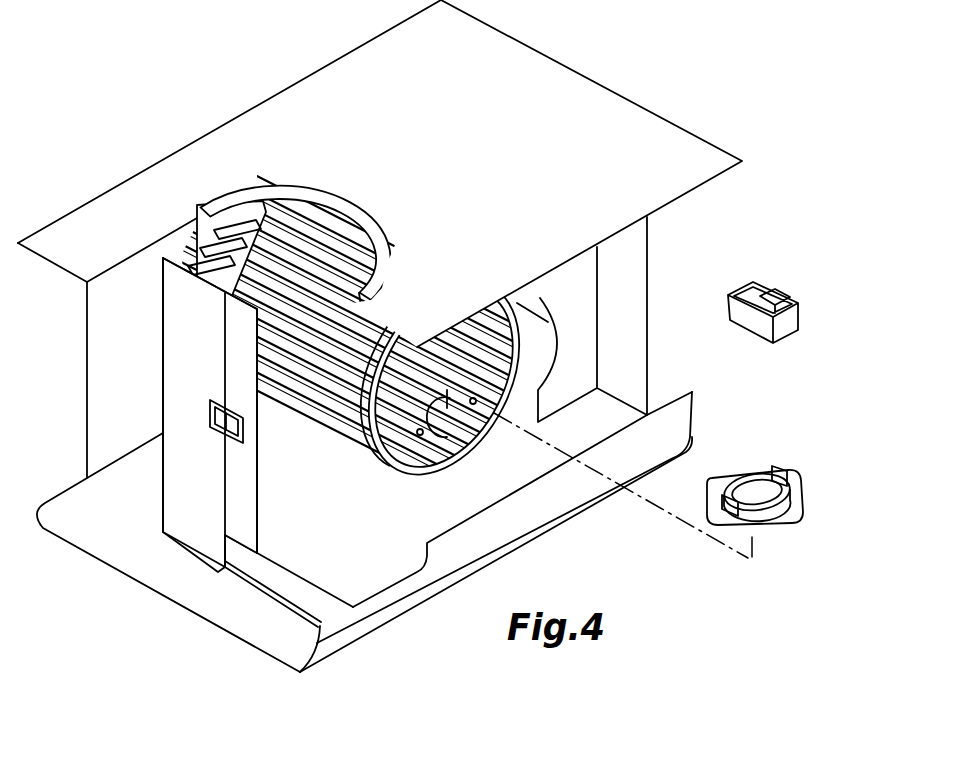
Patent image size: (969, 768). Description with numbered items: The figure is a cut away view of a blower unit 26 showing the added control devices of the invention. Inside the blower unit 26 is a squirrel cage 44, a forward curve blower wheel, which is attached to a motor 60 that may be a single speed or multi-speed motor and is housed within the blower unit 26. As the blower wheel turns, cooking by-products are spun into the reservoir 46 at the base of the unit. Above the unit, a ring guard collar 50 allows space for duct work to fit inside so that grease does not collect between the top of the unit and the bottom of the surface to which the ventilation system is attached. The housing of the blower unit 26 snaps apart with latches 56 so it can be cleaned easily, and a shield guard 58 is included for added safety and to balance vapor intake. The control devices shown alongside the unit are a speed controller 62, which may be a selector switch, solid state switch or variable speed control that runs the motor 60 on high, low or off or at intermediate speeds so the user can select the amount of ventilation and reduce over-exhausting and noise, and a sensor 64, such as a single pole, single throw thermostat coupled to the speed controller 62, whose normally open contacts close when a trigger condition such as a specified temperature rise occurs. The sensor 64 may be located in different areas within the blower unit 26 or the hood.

The blower unit 26 is at (617, 102).
The squirrel cage 44 is at (320, 420).
The reservoir 46 is at (418, 551).
The ring guard collar 50 is at (284, 186).
The latches 56 is at (212, 430).
The shield guard 58 is at (680, 419).
The motor 60 is at (232, 224).
The speed controller 62 is at (757, 284).
The sensor 64 is at (772, 468).